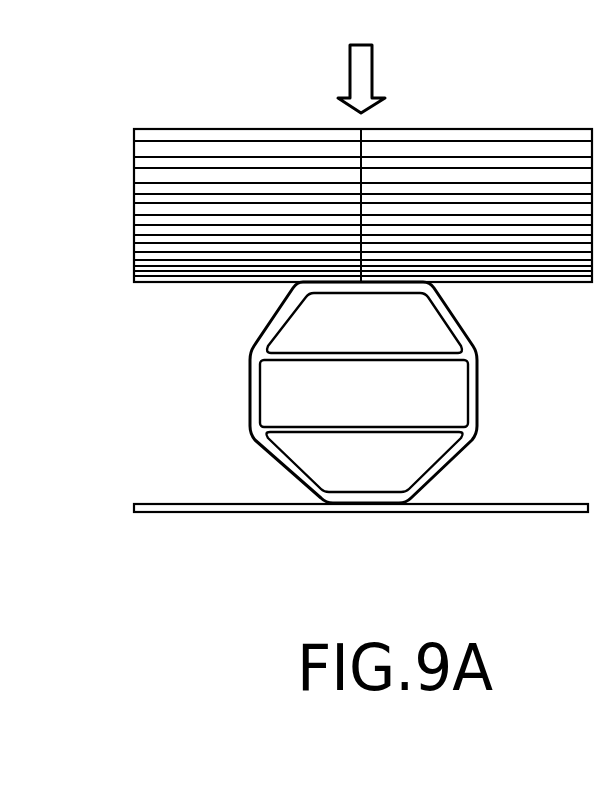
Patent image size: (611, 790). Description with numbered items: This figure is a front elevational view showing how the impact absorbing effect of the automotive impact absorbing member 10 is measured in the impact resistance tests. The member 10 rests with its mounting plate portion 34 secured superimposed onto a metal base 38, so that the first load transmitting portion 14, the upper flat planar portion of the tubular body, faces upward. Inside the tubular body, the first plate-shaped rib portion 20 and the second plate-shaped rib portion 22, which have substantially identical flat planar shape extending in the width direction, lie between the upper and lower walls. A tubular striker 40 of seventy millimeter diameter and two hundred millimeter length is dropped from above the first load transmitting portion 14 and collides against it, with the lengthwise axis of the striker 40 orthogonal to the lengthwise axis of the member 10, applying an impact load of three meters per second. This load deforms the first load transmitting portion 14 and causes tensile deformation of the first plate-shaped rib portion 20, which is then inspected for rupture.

The automotive impact absorbing member 10 is at (364, 392).
The first load transmitting portion 14 is at (377, 288).
The first plate-shaped rib portion 20 is at (365, 357).
The second plate-shaped rib portion 22 is at (373, 427).
The mounting plate portion 34 is at (362, 497).
The metal base 38 is at (503, 502).
The tubular striker 40 is at (526, 288).